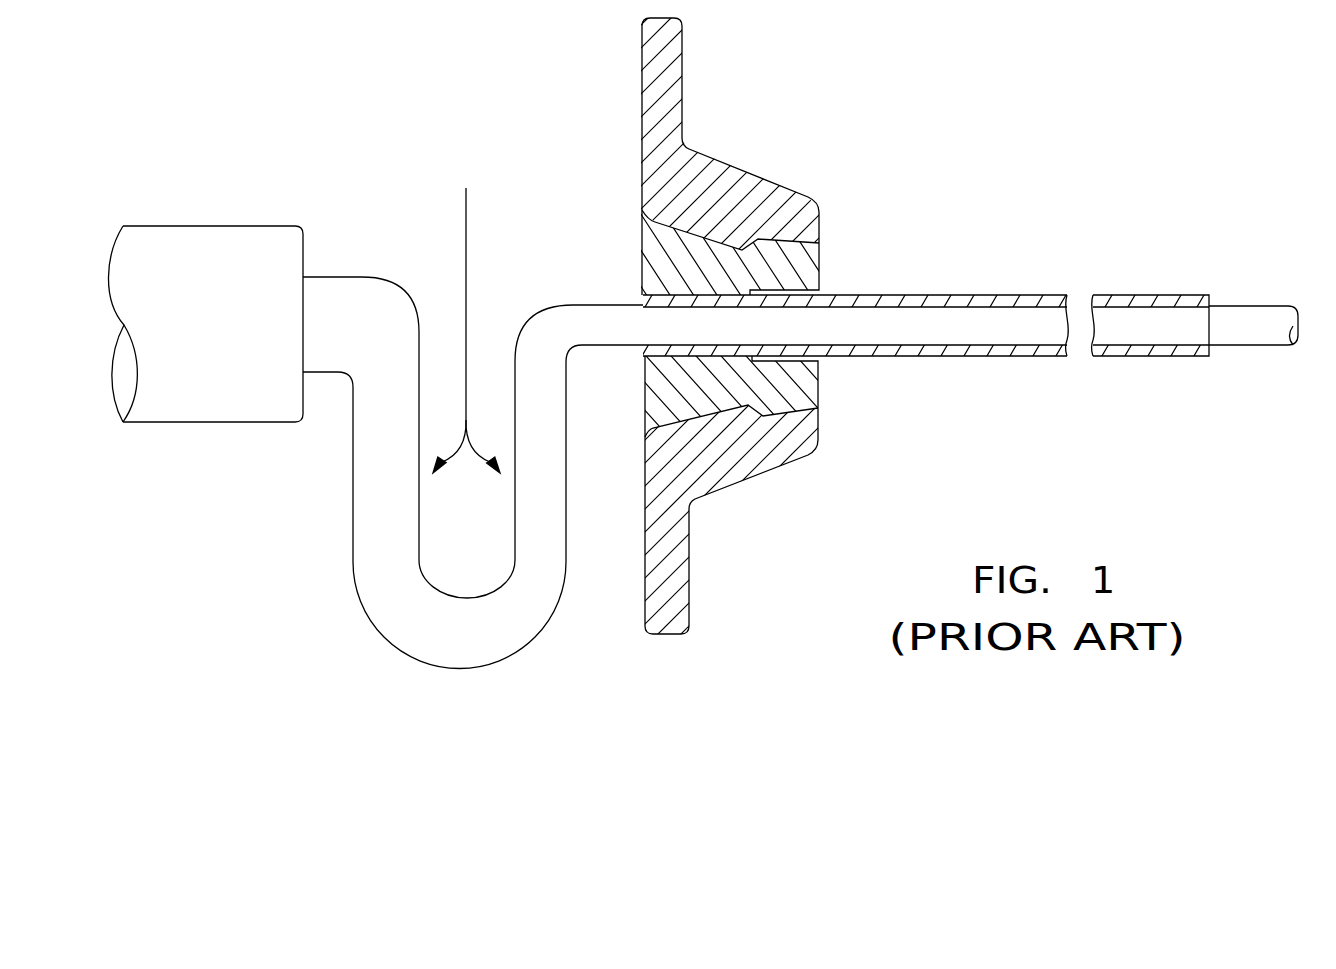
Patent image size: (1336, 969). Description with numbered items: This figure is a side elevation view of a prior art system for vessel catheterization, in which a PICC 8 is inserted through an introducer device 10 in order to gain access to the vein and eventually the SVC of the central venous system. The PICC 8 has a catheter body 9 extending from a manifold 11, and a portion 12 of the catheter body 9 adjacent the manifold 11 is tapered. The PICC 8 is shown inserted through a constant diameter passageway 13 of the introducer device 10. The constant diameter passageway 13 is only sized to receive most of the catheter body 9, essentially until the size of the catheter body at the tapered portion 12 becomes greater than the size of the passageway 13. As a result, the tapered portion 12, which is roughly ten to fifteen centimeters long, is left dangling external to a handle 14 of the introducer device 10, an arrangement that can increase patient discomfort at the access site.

The PICC 8 is at (307, 498).
The catheter body 9 is at (545, 333).
The introducer device 10 is at (867, 228).
The manifold 11 is at (225, 258).
The tapered portion 12 is at (466, 316).
The constant diameter passageway 13 is at (935, 327).
The handle 14 is at (683, 67).